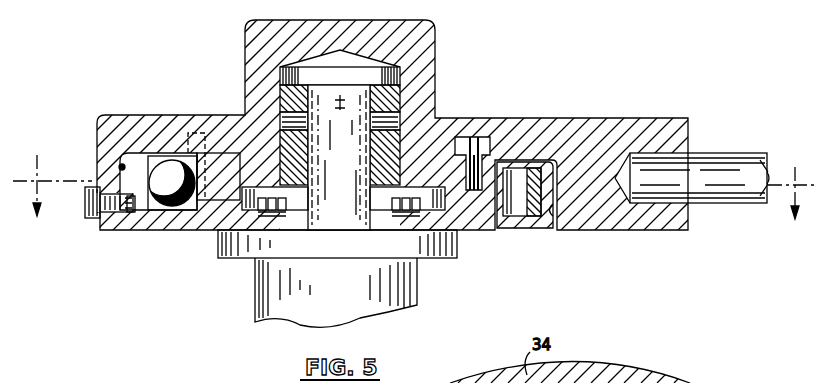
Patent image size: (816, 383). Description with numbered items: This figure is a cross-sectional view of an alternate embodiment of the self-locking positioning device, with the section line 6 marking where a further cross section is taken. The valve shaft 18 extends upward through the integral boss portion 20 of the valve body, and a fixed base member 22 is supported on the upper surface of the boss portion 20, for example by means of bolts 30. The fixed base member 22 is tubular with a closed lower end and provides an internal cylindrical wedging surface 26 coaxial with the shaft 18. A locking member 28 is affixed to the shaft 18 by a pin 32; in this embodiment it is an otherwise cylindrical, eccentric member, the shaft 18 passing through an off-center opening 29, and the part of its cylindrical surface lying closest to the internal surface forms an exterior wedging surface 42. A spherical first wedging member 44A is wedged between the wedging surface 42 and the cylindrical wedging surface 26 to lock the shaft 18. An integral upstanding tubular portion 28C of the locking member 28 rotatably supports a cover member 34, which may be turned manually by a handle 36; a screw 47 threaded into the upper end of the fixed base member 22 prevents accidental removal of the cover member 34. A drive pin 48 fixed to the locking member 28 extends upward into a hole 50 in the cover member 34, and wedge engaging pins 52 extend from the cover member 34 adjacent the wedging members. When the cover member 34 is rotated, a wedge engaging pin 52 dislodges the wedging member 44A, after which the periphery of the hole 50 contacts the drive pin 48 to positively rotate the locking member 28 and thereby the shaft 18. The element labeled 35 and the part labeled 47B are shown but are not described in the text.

The section line 6— 6 is at (414, 197).
The shaft 18 is at (352, 188).
The boss portion 20 is at (265, 288).
The fixed base member 22 is at (513, 230).
The internal cylindrical wedging surface 26 is at (152, 155).
The locking member 28 is at (405, 150).
The upstanding tubular portion 28C is at (392, 106).
The off-center opening 29 is at (308, 168).
The bolts 30 is at (278, 196).
The pin 32 is at (352, 172).
The cover member 34 is at (492, 125).
The block 35 is at (290, 102).
The handle 36 is at (718, 155).
The wedging surface 42 is at (203, 165).
The first wedging member 44A is at (172, 206).
The screw 47 is at (85, 206).
The clip 47B is at (125, 212).
The drive pin 48 is at (468, 168).
The hole 50 is at (486, 148).
The wedge engaging pins 52 is at (205, 120).